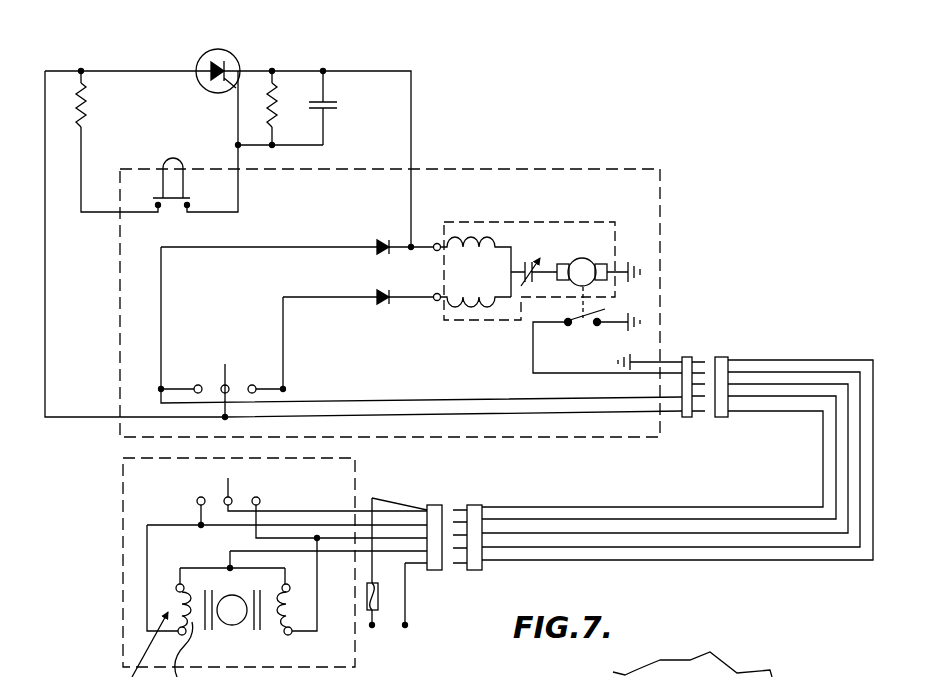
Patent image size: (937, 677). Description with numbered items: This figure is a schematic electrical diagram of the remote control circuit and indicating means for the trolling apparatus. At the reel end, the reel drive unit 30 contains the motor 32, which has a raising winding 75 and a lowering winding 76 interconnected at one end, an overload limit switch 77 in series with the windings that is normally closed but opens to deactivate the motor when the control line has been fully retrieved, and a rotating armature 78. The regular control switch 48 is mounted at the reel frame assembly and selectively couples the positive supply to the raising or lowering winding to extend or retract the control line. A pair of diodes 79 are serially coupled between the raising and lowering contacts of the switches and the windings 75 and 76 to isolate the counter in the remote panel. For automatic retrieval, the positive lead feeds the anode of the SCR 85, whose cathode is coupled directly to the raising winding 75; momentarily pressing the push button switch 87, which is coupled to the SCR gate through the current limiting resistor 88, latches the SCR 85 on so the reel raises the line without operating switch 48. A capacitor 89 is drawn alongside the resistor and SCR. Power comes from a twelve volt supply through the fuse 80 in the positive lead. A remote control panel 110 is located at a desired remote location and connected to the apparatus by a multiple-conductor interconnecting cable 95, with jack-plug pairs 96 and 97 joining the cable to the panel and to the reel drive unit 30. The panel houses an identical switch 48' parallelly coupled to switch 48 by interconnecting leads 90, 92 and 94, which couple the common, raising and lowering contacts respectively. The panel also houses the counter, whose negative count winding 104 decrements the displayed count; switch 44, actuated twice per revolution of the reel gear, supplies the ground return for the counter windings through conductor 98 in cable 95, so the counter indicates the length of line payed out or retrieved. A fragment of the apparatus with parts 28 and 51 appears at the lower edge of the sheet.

The SCR 85 is at (242, 56).
The current limiting resistor 88 is at (86, 110).
The push button switch 87 is at (181, 154).
The capacitor 89 is at (309, 107).
The reel drive unit 30 is at (643, 165).
The motor 32 is at (545, 222).
The raising winding 75 is at (487, 232).
The lowering winding 76 is at (497, 318).
The overload limit switch 77 is at (530, 261).
The rotating armature 78 is at (592, 258).
The diodes 79 is at (378, 244).
The control switch 48 is at (232, 353).
The switch 44 is at (605, 309).
The jack-plug pair 97 is at (723, 352).
The interconnecting cable 95 is at (731, 567).
The interconnecting lead 90 is at (541, 501).
The interconnecting lead 92 is at (570, 522).
The interconnecting lead 94 is at (605, 535).
The interconnecting conductor 98 is at (632, 549).
The remote control panel 110 is at (120, 553).
The switch 48' is at (196, 488).
The negative count winding 104 is at (298, 627).
The jack-plug pair 96 is at (474, 576).
The fuse 80 is at (380, 595).
The housing 28 is at (672, 676).
The member 51 is at (625, 675).